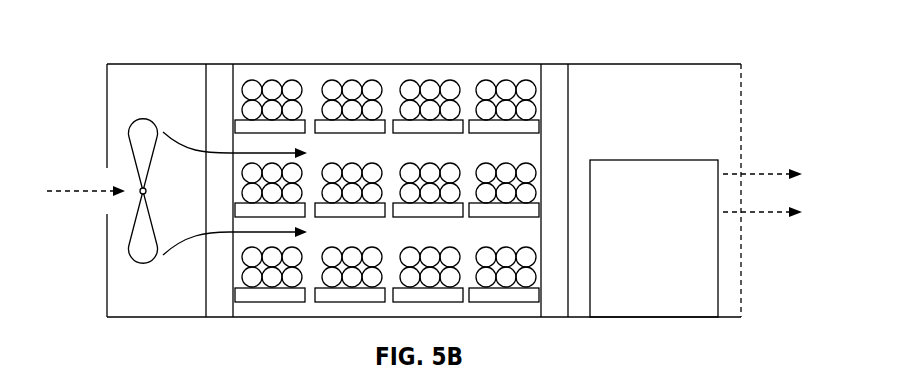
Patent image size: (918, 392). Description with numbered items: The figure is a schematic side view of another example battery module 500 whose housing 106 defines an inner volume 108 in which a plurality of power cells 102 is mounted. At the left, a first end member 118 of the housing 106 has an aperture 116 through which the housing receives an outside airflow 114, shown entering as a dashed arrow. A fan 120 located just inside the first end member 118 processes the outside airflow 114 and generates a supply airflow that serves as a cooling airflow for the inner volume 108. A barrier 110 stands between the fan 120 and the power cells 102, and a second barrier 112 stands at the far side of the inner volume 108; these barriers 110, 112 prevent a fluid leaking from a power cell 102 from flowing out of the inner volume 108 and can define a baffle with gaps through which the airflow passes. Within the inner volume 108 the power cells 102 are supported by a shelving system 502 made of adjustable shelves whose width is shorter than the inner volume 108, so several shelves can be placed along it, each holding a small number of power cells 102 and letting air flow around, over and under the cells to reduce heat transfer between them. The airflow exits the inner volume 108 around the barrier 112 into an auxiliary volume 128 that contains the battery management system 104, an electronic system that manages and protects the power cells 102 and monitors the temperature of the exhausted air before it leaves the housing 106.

The battery module 500 is at (126, 50).
The housing 106 is at (512, 64).
The first end member 118 is at (107, 113).
The aperture 116 is at (107, 274).
The outside airflow 114 is at (88, 191).
The fan 120 is at (143, 122).
The barrier 110 is at (215, 251).
The inner volume 108 is at (271, 77).
The power cell 102 is at (351, 80).
The shelving system 502 is at (411, 122).
The barrier 112 is at (570, 97).
The auxiliary volume 128 is at (732, 98).
The battery management system 104 is at (713, 194).